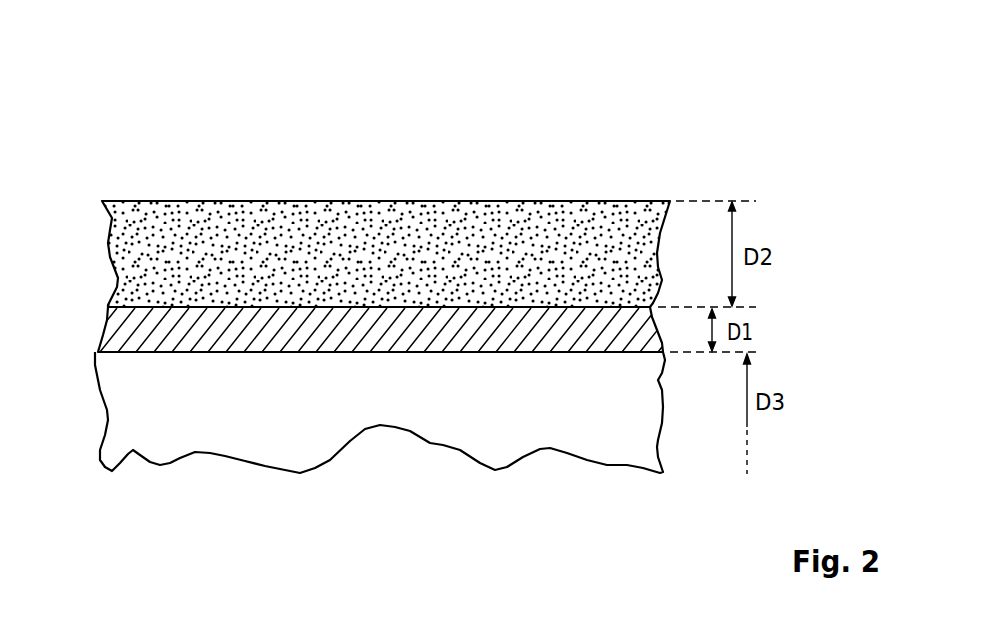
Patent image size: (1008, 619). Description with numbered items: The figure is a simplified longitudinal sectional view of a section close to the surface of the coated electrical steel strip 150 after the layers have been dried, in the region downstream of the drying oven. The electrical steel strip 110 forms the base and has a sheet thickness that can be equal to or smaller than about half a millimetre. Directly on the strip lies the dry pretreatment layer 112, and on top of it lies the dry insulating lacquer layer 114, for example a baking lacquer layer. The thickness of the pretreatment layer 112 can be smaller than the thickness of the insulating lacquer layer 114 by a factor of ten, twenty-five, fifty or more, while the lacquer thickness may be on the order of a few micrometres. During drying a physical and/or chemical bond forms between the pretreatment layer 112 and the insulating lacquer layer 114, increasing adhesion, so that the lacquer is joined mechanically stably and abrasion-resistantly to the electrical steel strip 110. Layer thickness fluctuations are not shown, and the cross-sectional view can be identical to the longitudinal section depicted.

The coated electrical steel strip 150 is at (564, 89).
The insulating lacquer layer 114 is at (238, 211).
The pretreatment layer 112 is at (118, 331).
The electrical steel strip 110 is at (492, 445).